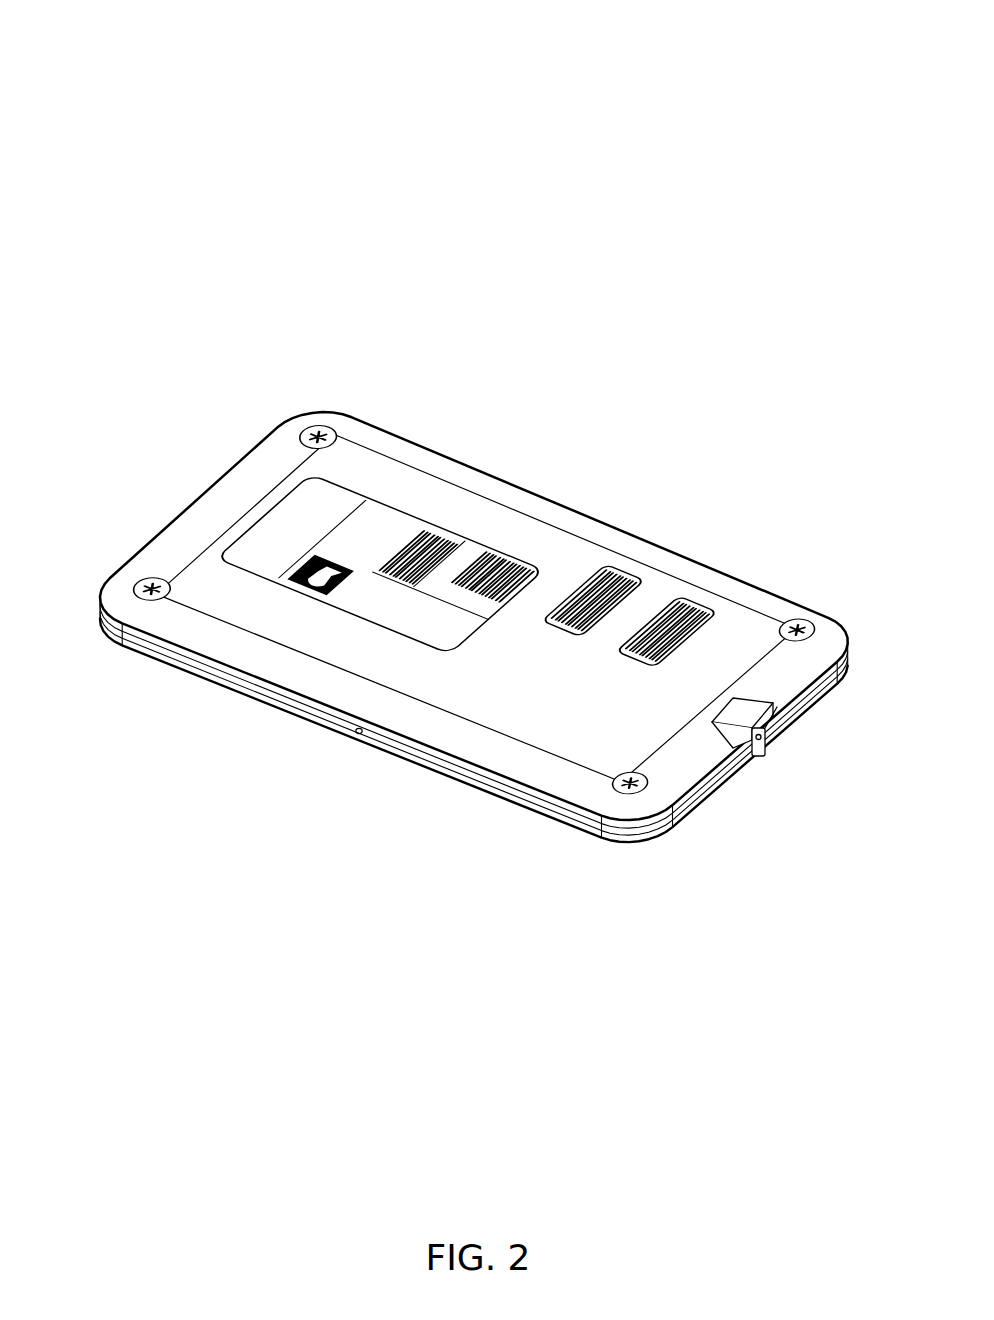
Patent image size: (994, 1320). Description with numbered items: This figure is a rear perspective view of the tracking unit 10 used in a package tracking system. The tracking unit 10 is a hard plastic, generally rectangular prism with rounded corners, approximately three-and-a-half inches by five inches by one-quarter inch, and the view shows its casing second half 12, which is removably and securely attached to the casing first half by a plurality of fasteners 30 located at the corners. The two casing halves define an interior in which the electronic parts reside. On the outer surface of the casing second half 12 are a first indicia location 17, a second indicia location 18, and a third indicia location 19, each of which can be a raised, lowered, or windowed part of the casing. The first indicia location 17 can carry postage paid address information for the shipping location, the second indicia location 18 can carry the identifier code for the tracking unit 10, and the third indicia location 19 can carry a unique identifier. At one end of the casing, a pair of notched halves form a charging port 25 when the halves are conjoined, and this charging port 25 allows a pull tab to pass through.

The tracking unit 10 is at (94, 162).
The casing second half 12 is at (513, 763).
The first indicia location 17 is at (290, 545).
The second indicia location 18 is at (593, 573).
The third indicia location 19 is at (700, 603).
The charging port 25 is at (767, 750).
The fasteners 30 is at (322, 432).